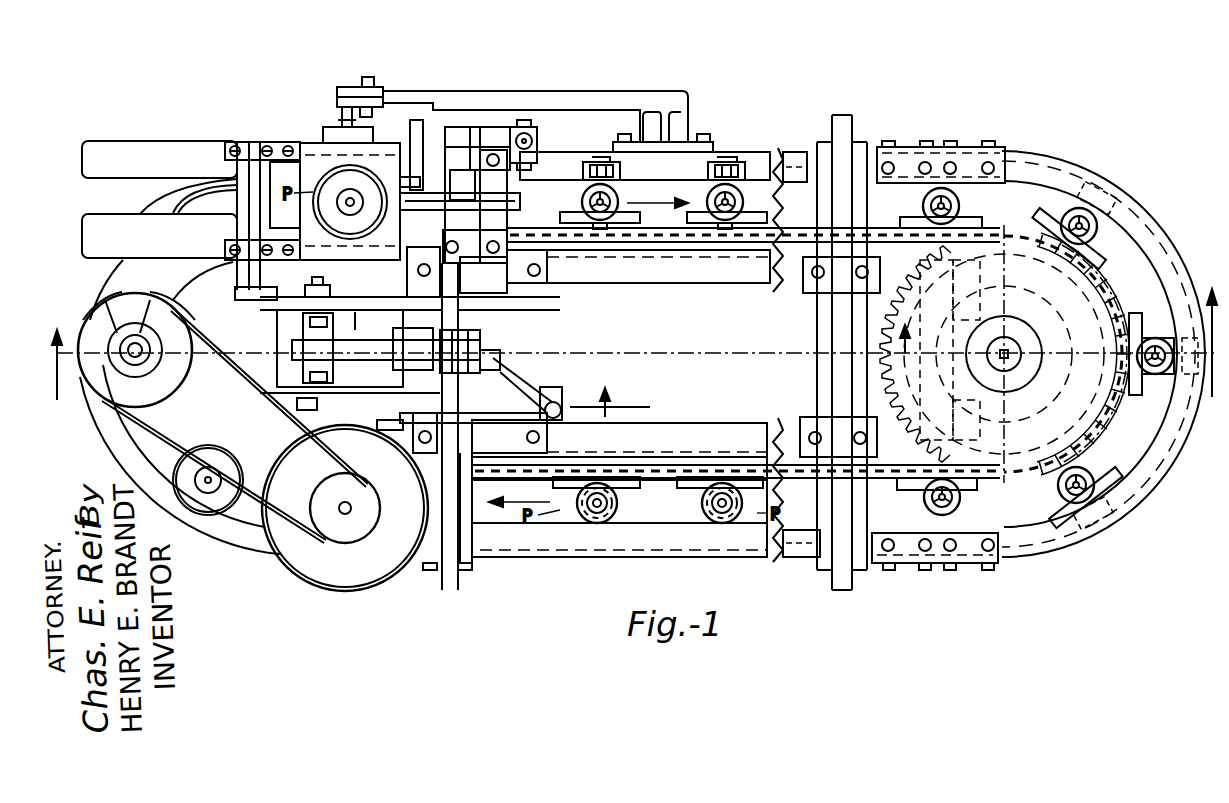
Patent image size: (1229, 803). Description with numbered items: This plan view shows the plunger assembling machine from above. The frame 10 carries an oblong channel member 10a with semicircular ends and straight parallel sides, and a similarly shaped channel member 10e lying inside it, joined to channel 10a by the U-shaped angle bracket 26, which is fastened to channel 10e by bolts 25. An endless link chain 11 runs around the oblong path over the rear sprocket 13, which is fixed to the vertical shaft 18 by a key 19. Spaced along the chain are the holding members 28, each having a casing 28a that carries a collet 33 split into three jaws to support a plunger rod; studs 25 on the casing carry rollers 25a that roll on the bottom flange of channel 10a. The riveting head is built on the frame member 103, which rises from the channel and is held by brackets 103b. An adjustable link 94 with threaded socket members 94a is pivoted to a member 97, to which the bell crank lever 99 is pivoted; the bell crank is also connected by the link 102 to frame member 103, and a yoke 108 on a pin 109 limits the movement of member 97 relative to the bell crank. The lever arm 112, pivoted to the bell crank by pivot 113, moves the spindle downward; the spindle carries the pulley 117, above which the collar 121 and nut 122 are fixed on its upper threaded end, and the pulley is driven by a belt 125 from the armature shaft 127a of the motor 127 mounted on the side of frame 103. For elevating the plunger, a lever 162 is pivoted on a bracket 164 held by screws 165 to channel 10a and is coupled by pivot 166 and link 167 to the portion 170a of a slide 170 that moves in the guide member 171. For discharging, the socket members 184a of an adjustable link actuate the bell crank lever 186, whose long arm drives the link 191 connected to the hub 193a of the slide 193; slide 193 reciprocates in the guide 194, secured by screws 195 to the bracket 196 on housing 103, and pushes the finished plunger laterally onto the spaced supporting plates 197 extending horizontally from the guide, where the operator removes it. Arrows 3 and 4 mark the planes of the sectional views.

The frame 10 is at (687, 430).
The channel member 10a is at (790, 571).
The channel member 10e is at (761, 278).
The link chain 11 is at (880, 230).
The sprocket 13 is at (880, 415).
The shaft 18 is at (1000, 340).
The key 19 is at (1030, 344).
The bolts 25 is at (731, 160).
The rollers 25a is at (708, 172).
The U-shaped angle bracket 26 is at (927, 369).
The holding members 28 is at (960, 200).
The casing 28a is at (745, 201).
The collet 33 is at (618, 200).
The link 94 is at (517, 381).
The socket members 94a is at (500, 358).
The member 97 is at (495, 334).
The bell crank lever 99 is at (289, 352).
The link 102 is at (365, 387).
The frame member 103 is at (307, 407).
The brackets 103b is at (470, 299).
The yoke 108 is at (413, 342).
The pin 109 is at (358, 310).
The lever arm 112 is at (280, 333).
The pivot 113 is at (280, 381).
The pulley 117 is at (113, 377).
The collar 121 is at (108, 298).
The nut 122 is at (152, 293).
The belt 125 is at (340, 457).
The motor 127 is at (373, 573).
The armature shaft 127a is at (350, 514).
The lever 162 is at (537, 95).
The bracket 164 is at (720, 162).
The screws 165 is at (702, 133).
The pivot 166 is at (372, 78).
The link 167 is at (341, 96).
The slide 170 is at (343, 137).
The portion 170a is at (342, 112).
The guide member 171 is at (378, 130).
The socket members 184a is at (539, 128).
The bell crank lever 186 is at (493, 140).
The link 191 is at (438, 127).
The slide 193 is at (392, 173).
The hub 193a is at (416, 178).
The guide 194 is at (307, 140).
The screws 195 is at (288, 141).
The bracket 196 is at (262, 277).
The supporting plates 197 is at (96, 217).
The section line 3- 3 is at (1058, 326).
The section line 4- 4 is at (348, 360).